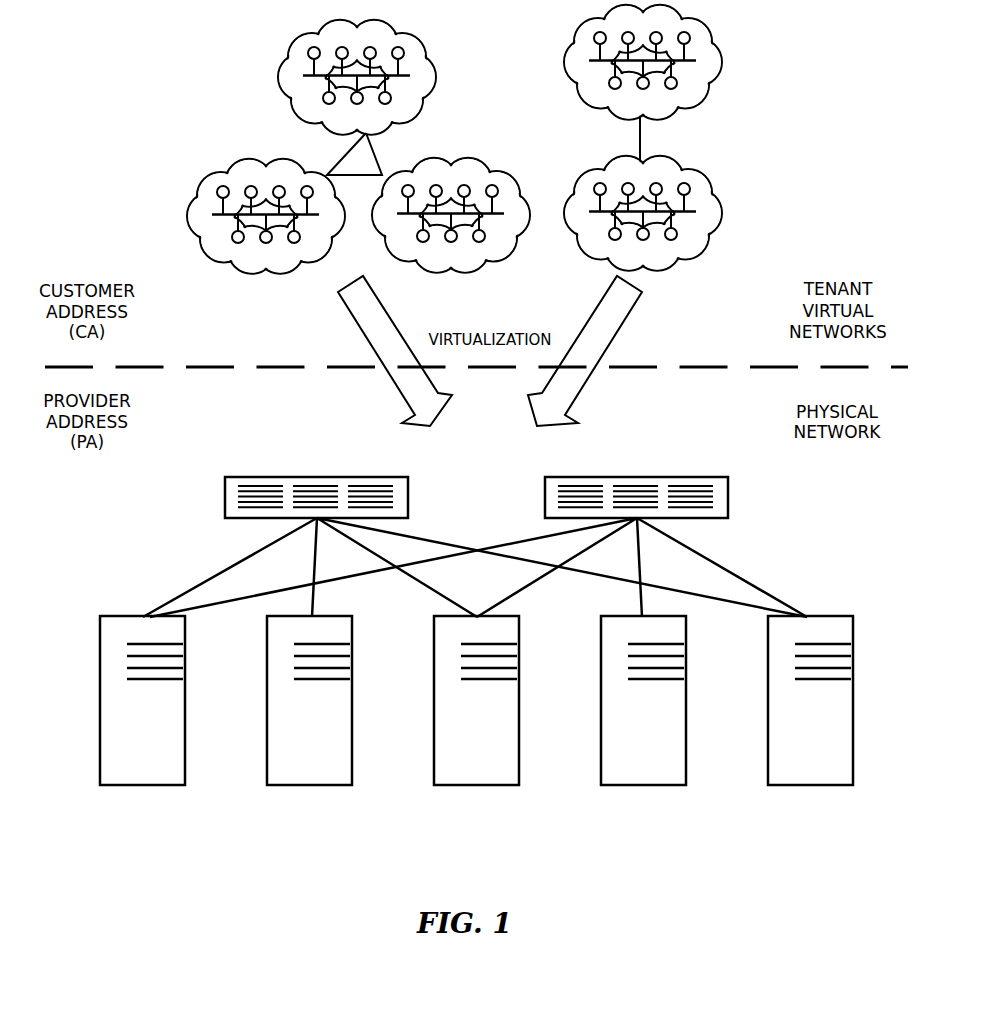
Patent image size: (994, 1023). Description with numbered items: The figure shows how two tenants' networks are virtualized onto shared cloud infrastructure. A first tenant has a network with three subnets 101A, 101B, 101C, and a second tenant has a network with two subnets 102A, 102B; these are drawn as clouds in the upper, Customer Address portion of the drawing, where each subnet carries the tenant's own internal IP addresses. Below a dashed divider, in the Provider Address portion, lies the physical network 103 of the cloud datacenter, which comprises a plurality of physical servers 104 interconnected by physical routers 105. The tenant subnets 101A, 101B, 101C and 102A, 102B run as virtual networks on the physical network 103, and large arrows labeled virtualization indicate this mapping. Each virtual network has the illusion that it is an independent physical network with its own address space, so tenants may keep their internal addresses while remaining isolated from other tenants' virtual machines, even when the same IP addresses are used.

The subnet 101A is at (200, 175).
The subnet 101B is at (300, 36).
The subnet 101C is at (467, 157).
The subnet 102A is at (727, 60).
The subnet 102B is at (725, 207).
The physical network 103 is at (118, 540).
The physical server 104 is at (143, 786).
The physical router 105 is at (277, 478).